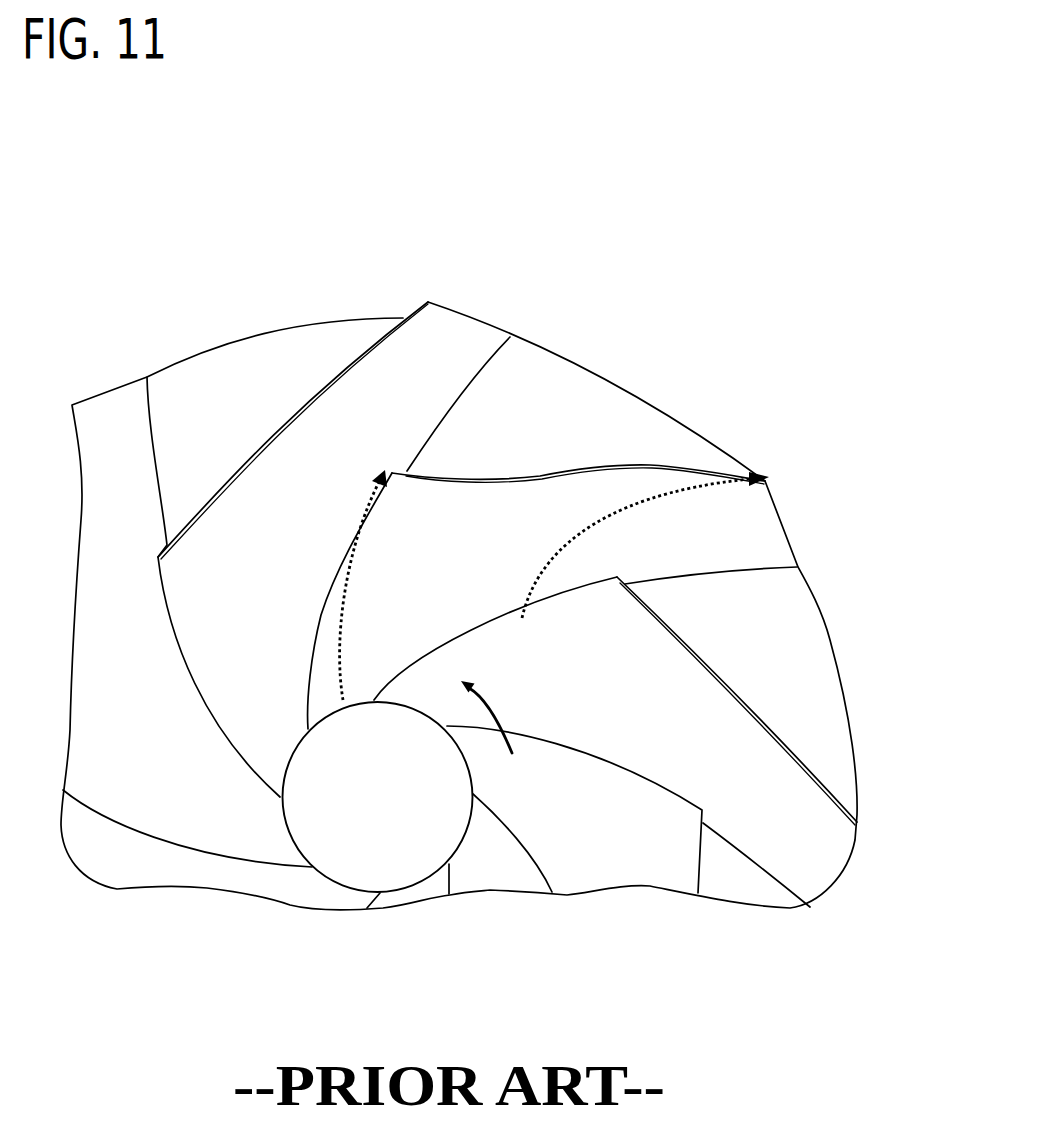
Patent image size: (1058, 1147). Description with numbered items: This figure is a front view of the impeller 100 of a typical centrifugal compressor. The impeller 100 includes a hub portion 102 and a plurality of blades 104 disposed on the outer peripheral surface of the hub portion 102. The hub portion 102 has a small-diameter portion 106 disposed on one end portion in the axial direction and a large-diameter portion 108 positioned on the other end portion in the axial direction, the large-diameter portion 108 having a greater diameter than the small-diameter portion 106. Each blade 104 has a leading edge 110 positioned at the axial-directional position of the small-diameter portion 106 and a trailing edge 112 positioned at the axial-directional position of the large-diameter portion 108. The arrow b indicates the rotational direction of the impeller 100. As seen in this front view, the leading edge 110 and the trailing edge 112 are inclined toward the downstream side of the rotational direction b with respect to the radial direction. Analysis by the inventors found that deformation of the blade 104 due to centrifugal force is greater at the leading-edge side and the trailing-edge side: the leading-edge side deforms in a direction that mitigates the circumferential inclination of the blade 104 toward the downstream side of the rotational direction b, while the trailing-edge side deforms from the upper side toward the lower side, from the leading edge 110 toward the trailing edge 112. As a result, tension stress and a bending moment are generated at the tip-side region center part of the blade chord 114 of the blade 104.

The impeller 100 is at (531, 227).
The hub portion 102 is at (556, 342).
The blade 104 is at (510, 466).
The small-diameter portion 106 is at (340, 858).
The large-diameter portion 108 is at (348, 317).
The leading edge 110 is at (321, 616).
The trailing edge 112 is at (783, 520).
The blade chord 114 is at (606, 465).
The rotational direction b is at (494, 716).